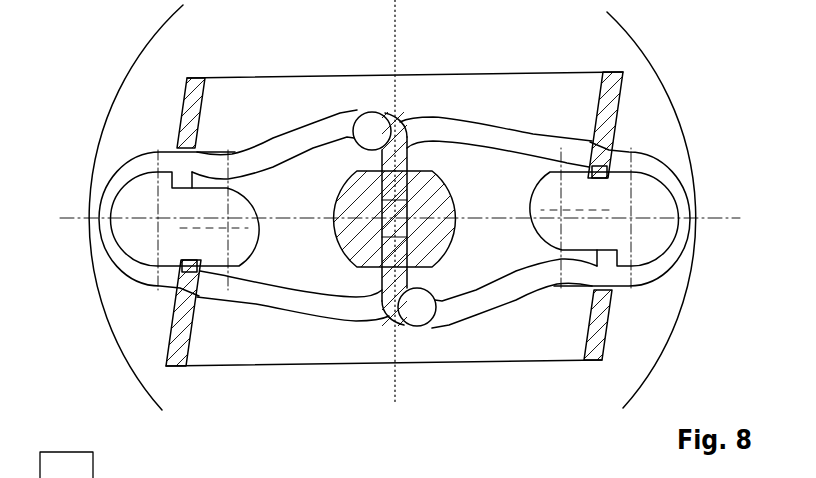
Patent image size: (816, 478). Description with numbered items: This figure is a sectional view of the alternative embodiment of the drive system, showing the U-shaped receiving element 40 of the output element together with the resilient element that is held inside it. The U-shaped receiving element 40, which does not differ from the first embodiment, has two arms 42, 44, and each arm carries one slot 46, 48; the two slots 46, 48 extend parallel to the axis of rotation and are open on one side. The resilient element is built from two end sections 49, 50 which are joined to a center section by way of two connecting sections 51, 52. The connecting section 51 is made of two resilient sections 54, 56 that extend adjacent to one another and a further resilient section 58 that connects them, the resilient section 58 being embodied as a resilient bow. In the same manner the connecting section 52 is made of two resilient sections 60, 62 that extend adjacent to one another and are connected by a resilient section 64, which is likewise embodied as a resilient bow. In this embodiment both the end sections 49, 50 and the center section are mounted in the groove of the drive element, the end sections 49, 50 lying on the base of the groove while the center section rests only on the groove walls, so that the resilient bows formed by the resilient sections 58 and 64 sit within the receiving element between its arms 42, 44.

The U-shaped receiving element 40 is at (394, 216).
The arm 42 is at (195, 88).
The arm 44 is at (613, 80).
The slot 46 is at (192, 198).
The slot 48 is at (597, 189).
The end section 49 is at (388, 158).
The end section 50 is at (400, 277).
The connecting section 51 is at (213, 230).
The connecting section 52 is at (568, 205).
The resilient section 54 is at (168, 152).
The resilient section 56 is at (225, 293).
The resilient section 58 is at (100, 238).
The resilient section 60 is at (583, 147).
The resilient section 62 is at (572, 278).
The resilient section 64 is at (657, 272).